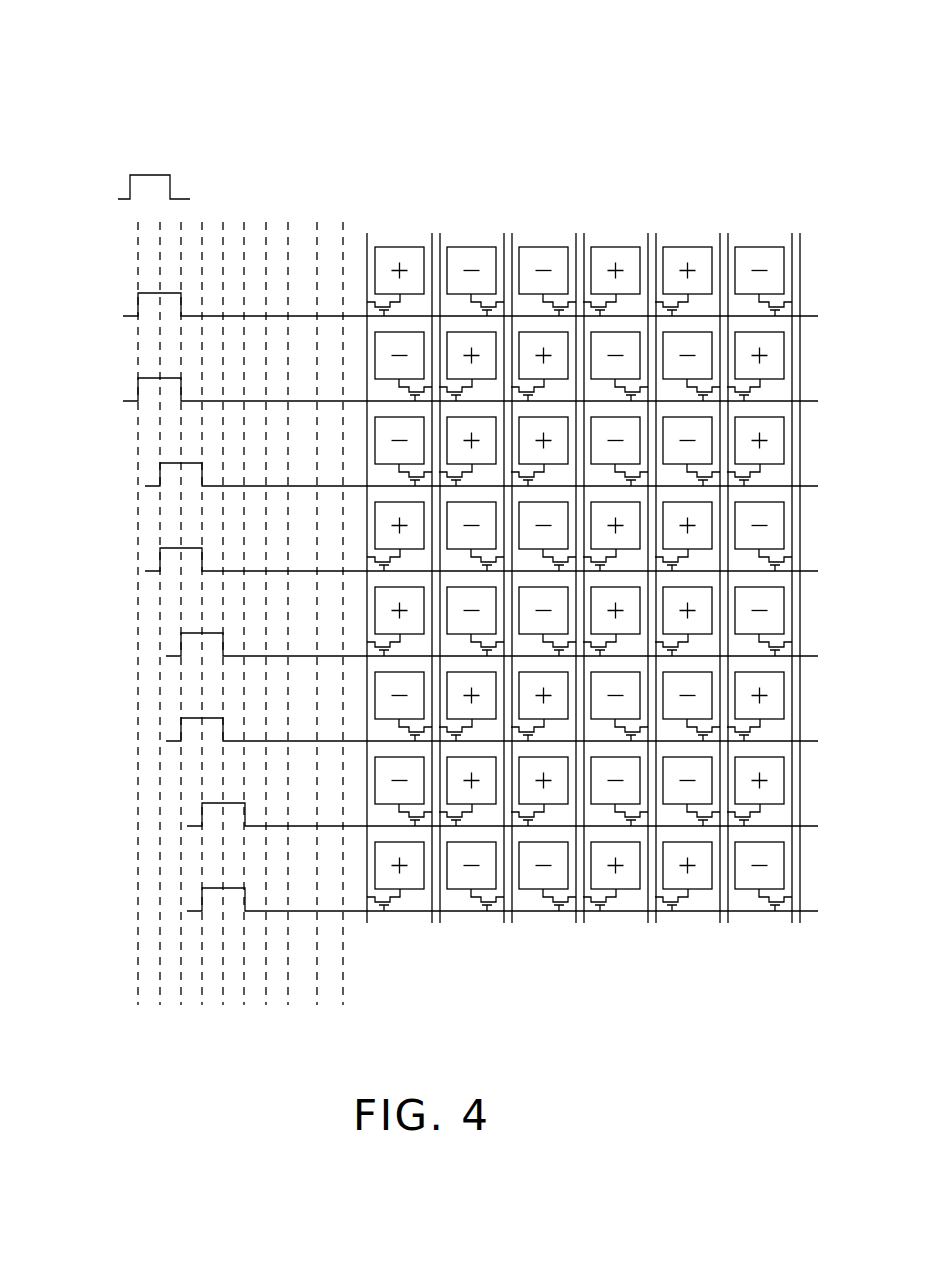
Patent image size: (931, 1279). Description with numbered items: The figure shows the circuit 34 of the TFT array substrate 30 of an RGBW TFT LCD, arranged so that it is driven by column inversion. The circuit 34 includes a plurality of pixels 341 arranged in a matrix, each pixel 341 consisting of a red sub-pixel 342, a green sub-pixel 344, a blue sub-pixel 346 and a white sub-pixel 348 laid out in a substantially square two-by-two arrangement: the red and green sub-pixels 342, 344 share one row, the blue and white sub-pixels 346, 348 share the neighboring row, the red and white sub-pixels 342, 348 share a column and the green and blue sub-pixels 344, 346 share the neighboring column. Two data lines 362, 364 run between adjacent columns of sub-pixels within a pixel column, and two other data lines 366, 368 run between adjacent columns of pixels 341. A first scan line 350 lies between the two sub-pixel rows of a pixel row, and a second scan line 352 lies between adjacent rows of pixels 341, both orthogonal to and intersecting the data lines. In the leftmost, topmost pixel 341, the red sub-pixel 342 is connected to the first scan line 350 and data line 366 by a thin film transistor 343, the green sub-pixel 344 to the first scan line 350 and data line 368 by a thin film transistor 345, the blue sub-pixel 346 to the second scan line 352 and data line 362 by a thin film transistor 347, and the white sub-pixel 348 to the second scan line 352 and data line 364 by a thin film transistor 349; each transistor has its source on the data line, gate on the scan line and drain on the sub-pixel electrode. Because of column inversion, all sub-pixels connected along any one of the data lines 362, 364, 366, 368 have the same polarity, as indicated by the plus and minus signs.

The TFT array substrate 30 is at (503, 36).
The circuit 34 is at (619, 206).
The pixel 341 is at (468, 226).
The red sub-pixel 342 is at (460, 286).
The thin film transistor 343 is at (472, 302).
The green sub-pixel 344 is at (380, 268).
The thin film transistor 345 is at (375, 302).
The blue sub-pixel 346 is at (384, 370).
The thin film transistor 347 is at (405, 392).
The white sub-pixel 348 is at (485, 367).
The thin film transistor 349 is at (450, 393).
The first scan line 350 is at (815, 316).
The second scan line 352 is at (813, 403).
The data line 362 is at (432, 235).
The data line 364 is at (440, 233).
The data line 366 is at (503, 233).
The data line 368 is at (367, 233).